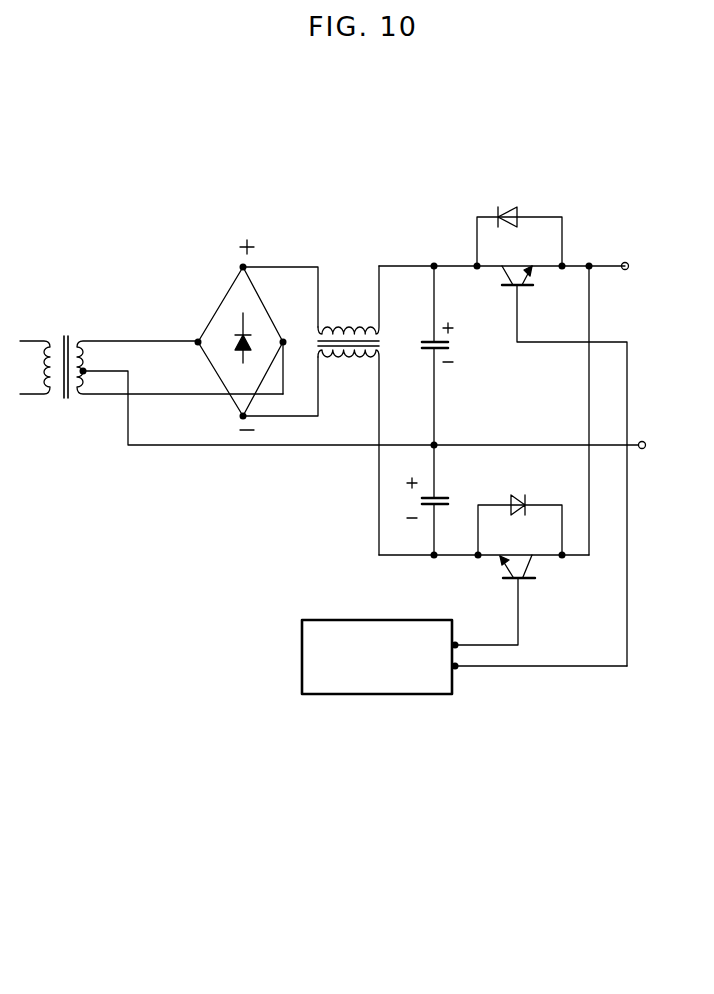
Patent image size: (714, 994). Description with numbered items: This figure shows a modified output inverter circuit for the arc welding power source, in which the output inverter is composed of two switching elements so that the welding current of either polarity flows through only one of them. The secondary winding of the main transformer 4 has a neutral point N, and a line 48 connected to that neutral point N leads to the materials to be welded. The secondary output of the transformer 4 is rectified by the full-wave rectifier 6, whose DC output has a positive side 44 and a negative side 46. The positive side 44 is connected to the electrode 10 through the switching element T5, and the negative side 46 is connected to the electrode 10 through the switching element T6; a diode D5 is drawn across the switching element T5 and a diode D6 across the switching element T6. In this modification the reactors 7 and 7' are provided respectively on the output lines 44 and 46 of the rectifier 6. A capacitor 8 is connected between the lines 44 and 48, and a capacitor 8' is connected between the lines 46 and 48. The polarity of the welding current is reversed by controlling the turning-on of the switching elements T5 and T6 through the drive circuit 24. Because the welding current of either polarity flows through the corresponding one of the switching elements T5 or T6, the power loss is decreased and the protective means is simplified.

The main transformer 4 is at (60, 330).
The neutral point N is at (91, 362).
The full-wave rectifier 6 is at (226, 296).
The positive side 44 is at (290, 266).
The negative side 46 is at (307, 417).
The reactor 7 is at (348, 306).
The reactor 7' is at (348, 452).
The line 48 is at (172, 446).
The electrode 10 is at (625, 262).
The capacitor 8 is at (456, 356).
The capacitor 8' is at (453, 502).
The diode D5 is at (508, 207).
The switching element T5 is at (507, 288).
The diode D6 is at (523, 500).
The switching element T6 is at (532, 578).
The drive circuit 24 is at (340, 620).